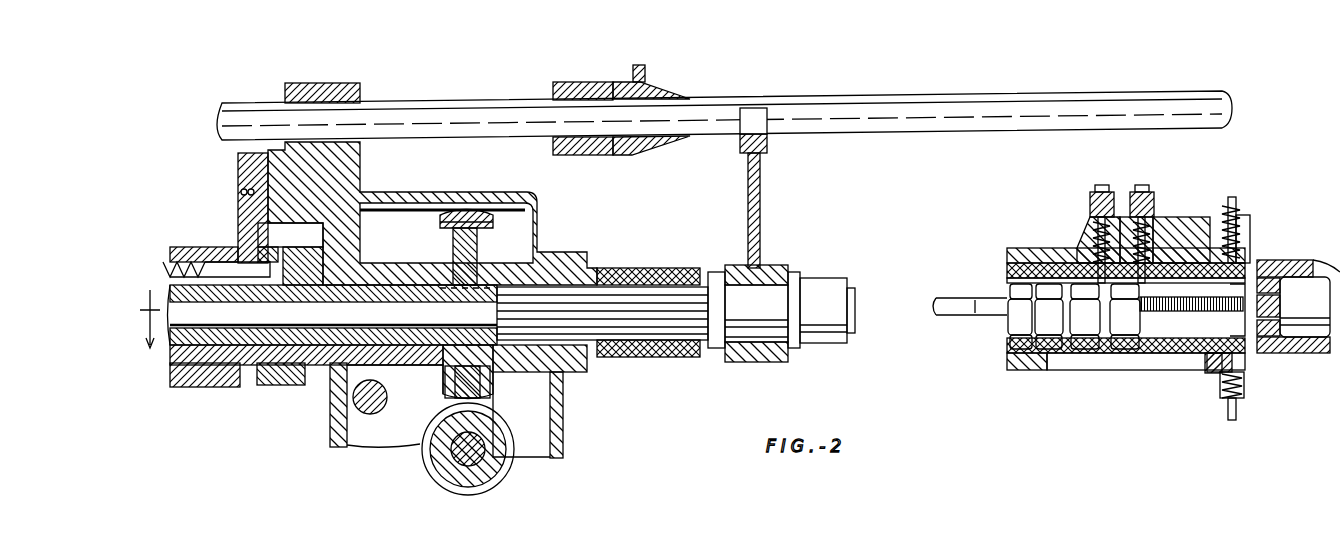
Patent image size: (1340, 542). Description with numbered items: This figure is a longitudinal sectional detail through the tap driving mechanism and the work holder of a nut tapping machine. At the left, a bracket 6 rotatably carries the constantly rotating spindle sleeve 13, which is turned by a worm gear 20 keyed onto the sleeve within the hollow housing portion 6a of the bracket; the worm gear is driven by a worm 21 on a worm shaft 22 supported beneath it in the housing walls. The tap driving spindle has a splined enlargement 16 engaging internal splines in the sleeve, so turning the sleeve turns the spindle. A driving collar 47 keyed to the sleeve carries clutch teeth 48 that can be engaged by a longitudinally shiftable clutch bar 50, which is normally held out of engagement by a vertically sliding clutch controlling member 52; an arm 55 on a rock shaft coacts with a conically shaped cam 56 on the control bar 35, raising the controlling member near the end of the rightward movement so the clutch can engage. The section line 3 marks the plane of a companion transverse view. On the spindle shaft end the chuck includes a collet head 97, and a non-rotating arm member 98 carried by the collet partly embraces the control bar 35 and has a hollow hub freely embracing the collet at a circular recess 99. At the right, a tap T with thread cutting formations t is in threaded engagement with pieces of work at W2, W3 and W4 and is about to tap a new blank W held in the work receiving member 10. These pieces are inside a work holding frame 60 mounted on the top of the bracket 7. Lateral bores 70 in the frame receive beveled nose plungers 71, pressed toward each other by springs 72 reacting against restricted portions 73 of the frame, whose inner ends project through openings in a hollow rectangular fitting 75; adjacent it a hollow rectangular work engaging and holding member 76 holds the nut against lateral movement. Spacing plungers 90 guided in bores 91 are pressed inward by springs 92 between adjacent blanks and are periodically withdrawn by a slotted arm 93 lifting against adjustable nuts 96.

The section line 3 is at (150, 330).
The bracket 6 is at (360, 86).
The hollow housing portion 6a is at (563, 408).
The bracket 7 is at (1034, 202).
The work receiving member 10 is at (1283, 355).
The spindle sleeve 13 is at (300, 322).
The splined enlargement 16 is at (656, 268).
The worm gear 20 is at (453, 240).
The worm 21 is at (440, 436).
The worm shaft 22 is at (478, 440).
The control bar 35 is at (808, 101).
The driving collar 47 is at (285, 385).
The clutch teeth 48 is at (280, 248).
The clutch bar 50 is at (222, 260).
The clutch controlling member 52 is at (238, 180).
The arm 55 is at (645, 76).
The cam 56 is at (553, 84).
The work holding frame 60 is at (1178, 240).
The lateral bores 70 is at (1244, 235).
The beveled nose plungers 71 is at (1268, 280).
The springs 72 is at (1243, 216).
The restricted portions 73 is at (1226, 405).
The hollow rectangular fitting 75 is at (1232, 205).
The work engaging and holding member 76 is at (1224, 225).
The plungers 90 is at (1085, 220).
The bores 91 is at (1124, 216).
The springs 92 is at (1092, 196).
The slotted arm 93 is at (1160, 215).
The adjustable nuts 96 is at (1148, 192).
The collet head 97 is at (788, 275).
The non-rotating arm member 98 is at (740, 112).
The circular recess 99 is at (748, 313).
The tap T is at (946, 336).
The piece of work W is at (1262, 282).
The piece of work W2 is at (1180, 350).
The piece of work W3 is at (1108, 350).
The piece of work W4 is at (1080, 350).
The thread cutting formations t is at (1294, 300).